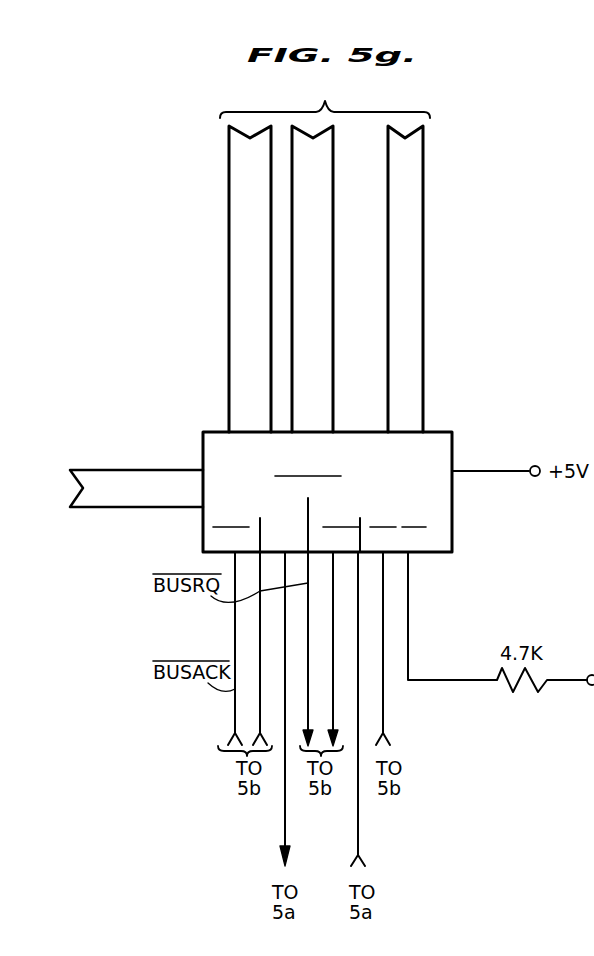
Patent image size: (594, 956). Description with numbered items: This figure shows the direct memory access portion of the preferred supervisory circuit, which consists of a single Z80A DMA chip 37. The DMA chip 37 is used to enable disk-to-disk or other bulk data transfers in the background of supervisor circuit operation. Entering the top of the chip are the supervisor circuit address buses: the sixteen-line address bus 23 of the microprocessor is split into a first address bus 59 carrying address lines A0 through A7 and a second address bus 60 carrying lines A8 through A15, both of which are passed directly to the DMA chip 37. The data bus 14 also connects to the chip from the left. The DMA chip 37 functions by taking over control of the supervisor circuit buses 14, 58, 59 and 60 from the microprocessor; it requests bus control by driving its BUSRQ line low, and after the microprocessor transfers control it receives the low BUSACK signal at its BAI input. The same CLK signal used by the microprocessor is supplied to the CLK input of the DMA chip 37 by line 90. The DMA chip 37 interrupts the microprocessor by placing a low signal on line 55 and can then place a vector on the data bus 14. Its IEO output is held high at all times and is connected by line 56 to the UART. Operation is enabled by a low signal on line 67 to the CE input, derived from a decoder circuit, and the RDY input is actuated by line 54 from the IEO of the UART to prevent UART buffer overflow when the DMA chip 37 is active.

The address bus 23 is at (216, 131).
The first address bus 59 is at (243, 152).
The second address bus 60 is at (322, 184).
The supervisor circuit bus 58 is at (413, 176).
The DMA chip 37 is at (207, 432).
The data bus 14 is at (118, 499).
The line 90 is at (260, 628).
The line 67 is at (385, 655).
The line 55 is at (333, 707).
The line 56 is at (284, 821).
The line 54 is at (357, 812).